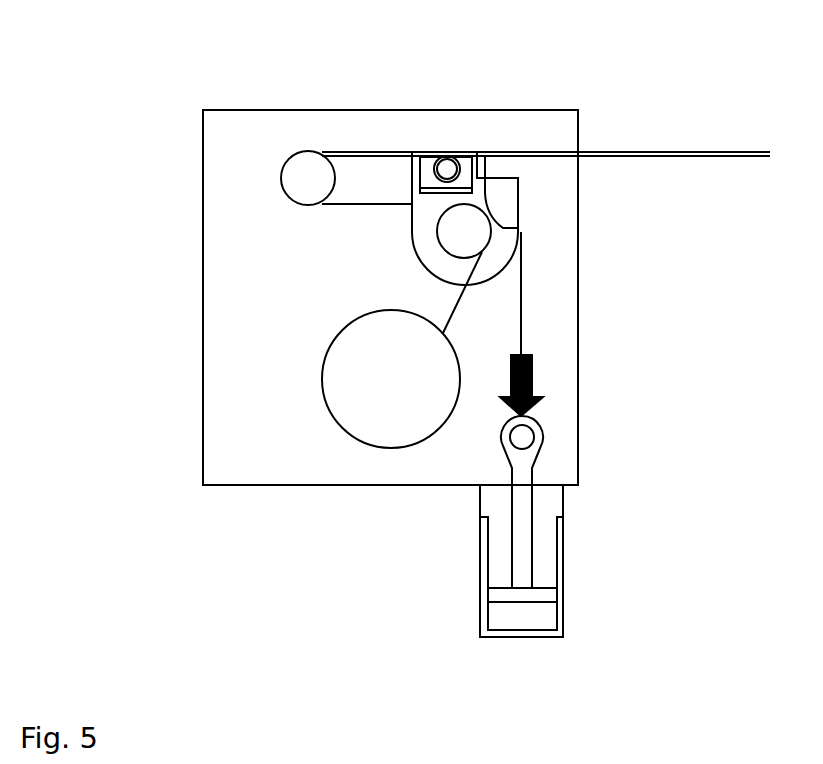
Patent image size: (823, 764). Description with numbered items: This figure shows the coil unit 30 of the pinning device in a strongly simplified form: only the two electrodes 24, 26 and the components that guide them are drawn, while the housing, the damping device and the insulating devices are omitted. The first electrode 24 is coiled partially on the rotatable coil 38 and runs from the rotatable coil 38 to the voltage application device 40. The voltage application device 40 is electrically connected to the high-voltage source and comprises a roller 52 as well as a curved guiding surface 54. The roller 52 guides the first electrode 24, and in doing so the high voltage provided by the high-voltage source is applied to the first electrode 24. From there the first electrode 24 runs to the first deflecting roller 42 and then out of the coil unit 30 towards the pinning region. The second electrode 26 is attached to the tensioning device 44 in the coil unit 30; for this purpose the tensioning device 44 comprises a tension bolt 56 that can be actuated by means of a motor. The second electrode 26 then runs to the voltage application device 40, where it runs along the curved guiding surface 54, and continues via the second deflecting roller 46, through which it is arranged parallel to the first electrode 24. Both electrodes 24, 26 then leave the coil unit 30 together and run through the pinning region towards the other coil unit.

The first electrode 24 is at (467, 292).
The second electrode 26 is at (522, 322).
The coil unit 30 is at (101, 109).
The rotatable coil 38 is at (345, 382).
The voltage application device 40 is at (445, 263).
The first deflecting roller 42 is at (297, 175).
The tensioning device 44 is at (626, 599).
The second deflecting roller 46 is at (447, 168).
The roller 52 is at (457, 230).
The curved guiding surface 54 is at (505, 203).
The tension bolt 56 is at (525, 502).